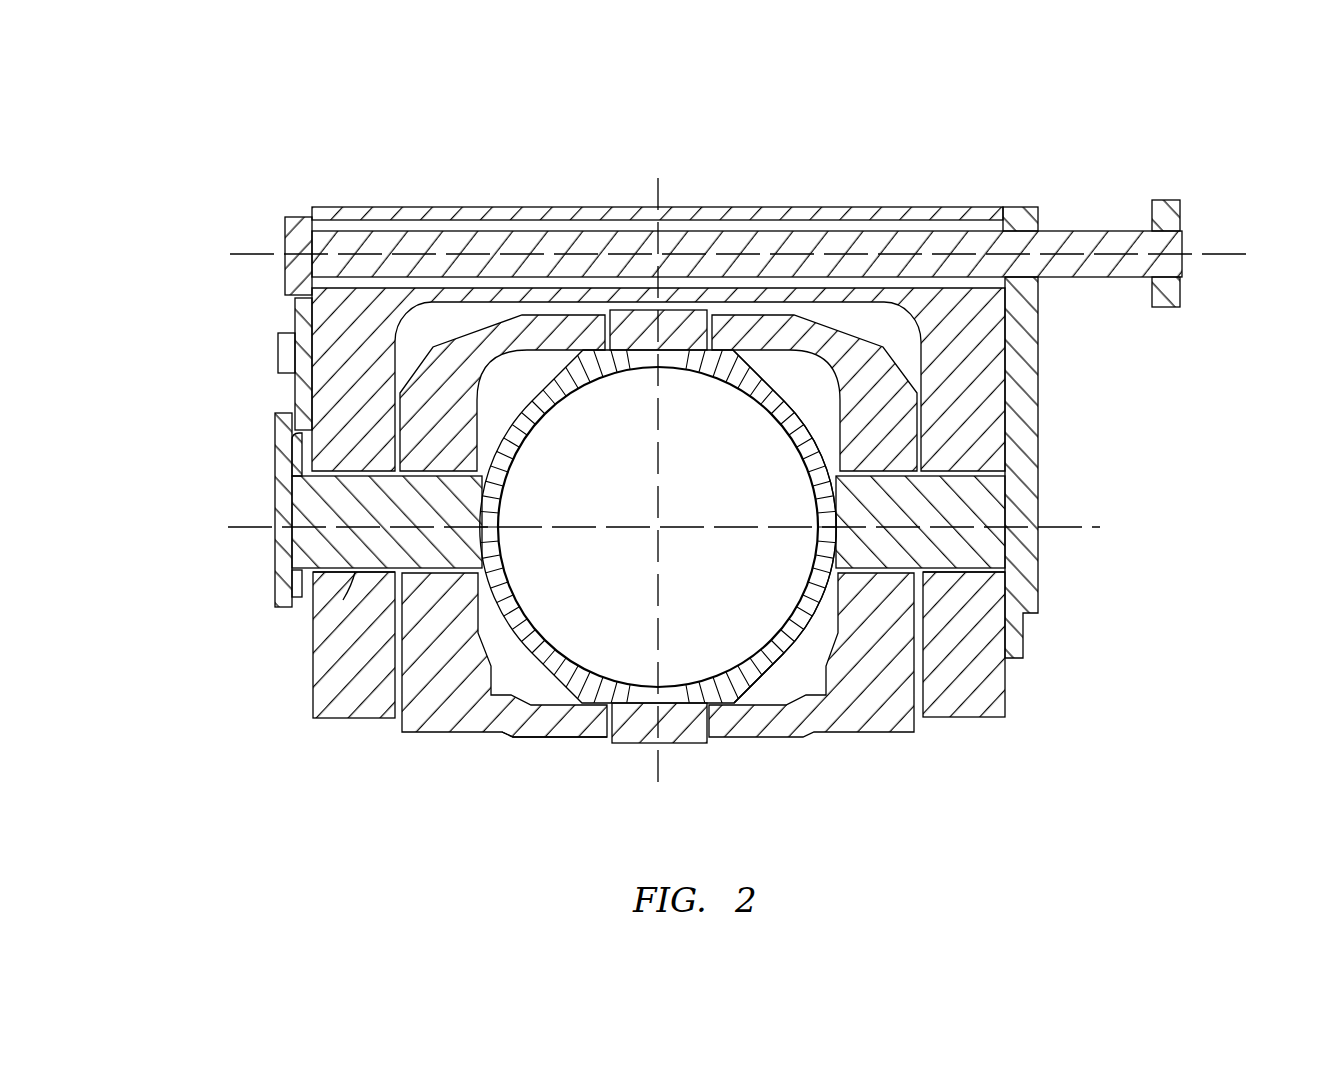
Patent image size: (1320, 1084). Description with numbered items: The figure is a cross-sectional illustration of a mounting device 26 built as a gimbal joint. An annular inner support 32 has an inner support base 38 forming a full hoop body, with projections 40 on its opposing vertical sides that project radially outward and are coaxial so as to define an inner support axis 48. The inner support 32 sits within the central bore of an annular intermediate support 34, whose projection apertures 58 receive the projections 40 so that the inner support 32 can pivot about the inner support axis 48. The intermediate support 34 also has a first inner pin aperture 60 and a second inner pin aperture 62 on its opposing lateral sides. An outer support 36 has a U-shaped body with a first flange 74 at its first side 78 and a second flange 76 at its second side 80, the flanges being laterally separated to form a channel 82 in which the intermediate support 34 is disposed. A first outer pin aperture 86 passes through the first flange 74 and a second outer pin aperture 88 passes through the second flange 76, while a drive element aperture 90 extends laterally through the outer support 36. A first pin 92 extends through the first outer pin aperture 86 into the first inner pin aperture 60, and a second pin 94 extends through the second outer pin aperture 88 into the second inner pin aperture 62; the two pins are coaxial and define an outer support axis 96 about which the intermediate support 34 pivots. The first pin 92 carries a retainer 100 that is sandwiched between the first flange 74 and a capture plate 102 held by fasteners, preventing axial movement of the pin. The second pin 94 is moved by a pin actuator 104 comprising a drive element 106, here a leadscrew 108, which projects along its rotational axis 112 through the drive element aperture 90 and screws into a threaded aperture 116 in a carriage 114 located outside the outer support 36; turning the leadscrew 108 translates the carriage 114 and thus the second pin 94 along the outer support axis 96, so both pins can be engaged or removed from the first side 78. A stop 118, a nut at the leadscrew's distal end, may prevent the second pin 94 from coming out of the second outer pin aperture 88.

The mounting device 26 is at (1145, 150).
The inner support 32 is at (777, 668).
The intermediate support 34 is at (511, 752).
The outer support 36 is at (300, 683).
The inner support base 38 is at (773, 410).
The projections 40 is at (622, 322).
The inner support axis 48 is at (642, 178).
The projection apertures 58 is at (585, 343).
The first inner pin aperture 60 is at (462, 569).
The second inner pin aperture 62 is at (822, 561).
The first flange 74 is at (350, 720).
The second flange 76 is at (963, 718).
The first side 78 is at (313, 650).
The second side 80 is at (1008, 700).
The channel 82 is at (438, 325).
The first outer pin aperture 86 is at (343, 600).
The second outer pin aperture 88 is at (967, 572).
The drive element aperture 90 is at (960, 228).
The first pin 92 is at (310, 497).
The second pin 94 is at (968, 496).
The outer support axis 96 is at (1100, 527).
The retainer 100 is at (292, 593).
The capture plate 102 is at (275, 440).
The pin actuator 104 is at (278, 350).
The drive element 106 is at (747, 254).
The leadscrew 108 is at (285, 228).
The rotational axis 112 is at (1240, 258).
The carriage 114 is at (1040, 334).
The threaded aperture 116 is at (1040, 222).
The stop 118 is at (1182, 212).